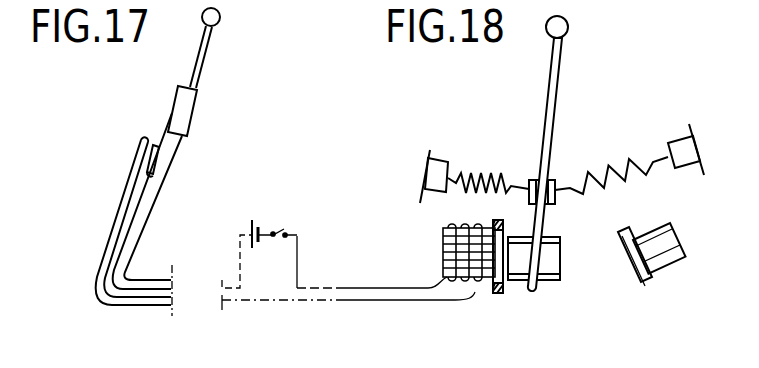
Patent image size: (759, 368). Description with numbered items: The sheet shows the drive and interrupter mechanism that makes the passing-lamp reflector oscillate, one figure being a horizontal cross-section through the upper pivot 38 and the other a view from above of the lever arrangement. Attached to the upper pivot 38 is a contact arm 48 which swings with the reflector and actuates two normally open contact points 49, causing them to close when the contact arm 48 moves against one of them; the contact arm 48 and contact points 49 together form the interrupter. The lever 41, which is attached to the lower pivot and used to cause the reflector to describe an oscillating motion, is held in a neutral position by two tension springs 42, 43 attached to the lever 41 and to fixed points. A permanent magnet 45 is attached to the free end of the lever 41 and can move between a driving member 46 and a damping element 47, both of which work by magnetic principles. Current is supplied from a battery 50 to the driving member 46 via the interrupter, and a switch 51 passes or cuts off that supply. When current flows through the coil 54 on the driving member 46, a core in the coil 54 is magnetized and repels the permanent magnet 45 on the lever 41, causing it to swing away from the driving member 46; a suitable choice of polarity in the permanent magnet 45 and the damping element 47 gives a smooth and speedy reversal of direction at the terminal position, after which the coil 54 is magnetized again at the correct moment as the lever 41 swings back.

In FIG. 17, the upper pivot 38 is at (218, 24).
In FIG. 17, the contact arm 48 is at (176, 103).
In FIG. 17, the contact points 49 is at (155, 170).
In FIG. 18, the lever 41 is at (552, 107).
In FIG. 18, the tension spring 42 is at (484, 176).
In FIG. 18, the tension spring 43 is at (603, 168).
In FIG. 18, the permanent magnet 45 is at (545, 243).
In FIG. 18, the driving member 46 is at (494, 283).
In FIG. 18, the damping element 47 is at (666, 270).
In FIG. 18, the battery 50 is at (260, 233).
In FIG. 18, the switch 51 is at (283, 231).
In FIG. 18, the coil 54 is at (442, 252).